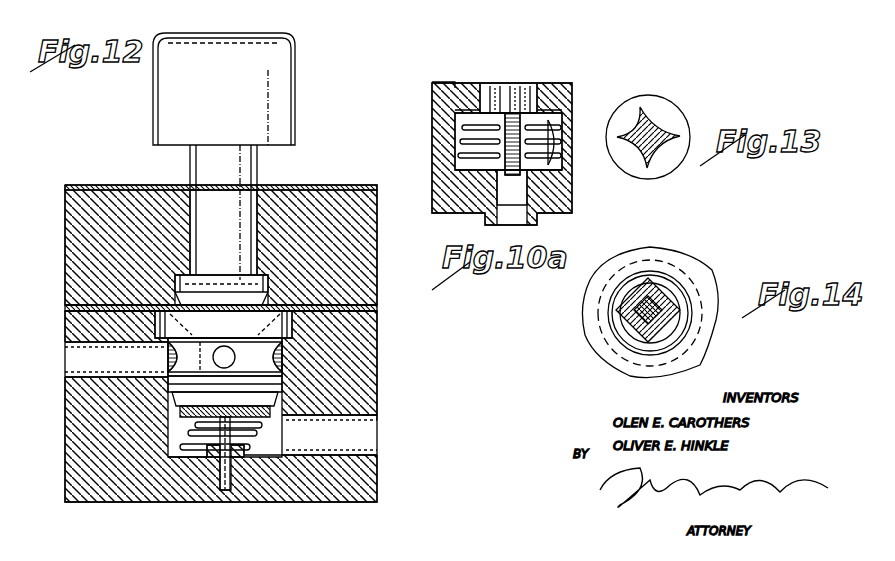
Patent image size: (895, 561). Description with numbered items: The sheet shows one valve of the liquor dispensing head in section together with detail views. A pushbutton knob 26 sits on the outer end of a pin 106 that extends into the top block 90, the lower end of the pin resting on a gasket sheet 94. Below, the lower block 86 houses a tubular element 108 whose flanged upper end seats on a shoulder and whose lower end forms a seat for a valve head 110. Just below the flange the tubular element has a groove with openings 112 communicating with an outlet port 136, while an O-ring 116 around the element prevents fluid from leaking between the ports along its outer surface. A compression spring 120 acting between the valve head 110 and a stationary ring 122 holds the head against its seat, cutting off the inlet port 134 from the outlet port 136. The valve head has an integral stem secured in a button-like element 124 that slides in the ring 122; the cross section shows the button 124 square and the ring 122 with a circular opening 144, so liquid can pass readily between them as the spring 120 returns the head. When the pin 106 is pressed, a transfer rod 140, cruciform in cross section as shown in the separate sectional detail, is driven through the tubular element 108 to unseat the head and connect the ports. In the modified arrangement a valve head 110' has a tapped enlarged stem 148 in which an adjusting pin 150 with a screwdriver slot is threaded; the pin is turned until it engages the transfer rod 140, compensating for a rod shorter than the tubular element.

In FIG. 12, the knob 26 is at (296, 48).
In FIG. 12, the lower block 86 is at (68, 422).
In FIG. 10A, the lower block 86 is at (572, 186).
In FIG. 12, the top block 90 is at (68, 228).
In FIG. 12, the gasket sheet 94 is at (372, 306).
In FIG. 12, the pin 106 is at (258, 163).
In FIG. 12, the tubular element 108 is at (300, 322).
In FIG. 10A, the tubular element 108 is at (565, 113).
In FIG. 12, the valve head 110 is at (251, 452).
In FIG. 13, the valve head 110 is at (655, 114).
In FIG. 10A, the valve head 110' is at (453, 143).
In FIG. 12, the openings 112 is at (212, 357).
In FIG. 12, the O-ring 116 is at (283, 385).
In FIG. 12, the compression spring 120 is at (282, 430).
In FIG. 10A, the compression spring 120 is at (478, 146).
In FIG. 14, the compression spring 120 is at (642, 290).
In FIG. 14, the ring 122 is at (702, 346).
In FIG. 14, the button-like element 124 is at (667, 293).
In FIG. 12, the inlet port 134 is at (371, 417).
In FIG. 12, the outlet port 136 is at (66, 356).
In FIG. 10A, the transfer rod 140 is at (500, 92).
In FIG. 13, the transfer rod 140 is at (655, 130).
In FIG. 14, the circular opening 144 is at (630, 333).
In FIG. 10A, the tapped enlarged stem 148 is at (550, 128).
In FIG. 10A, the adjusting pin 150 is at (456, 171).